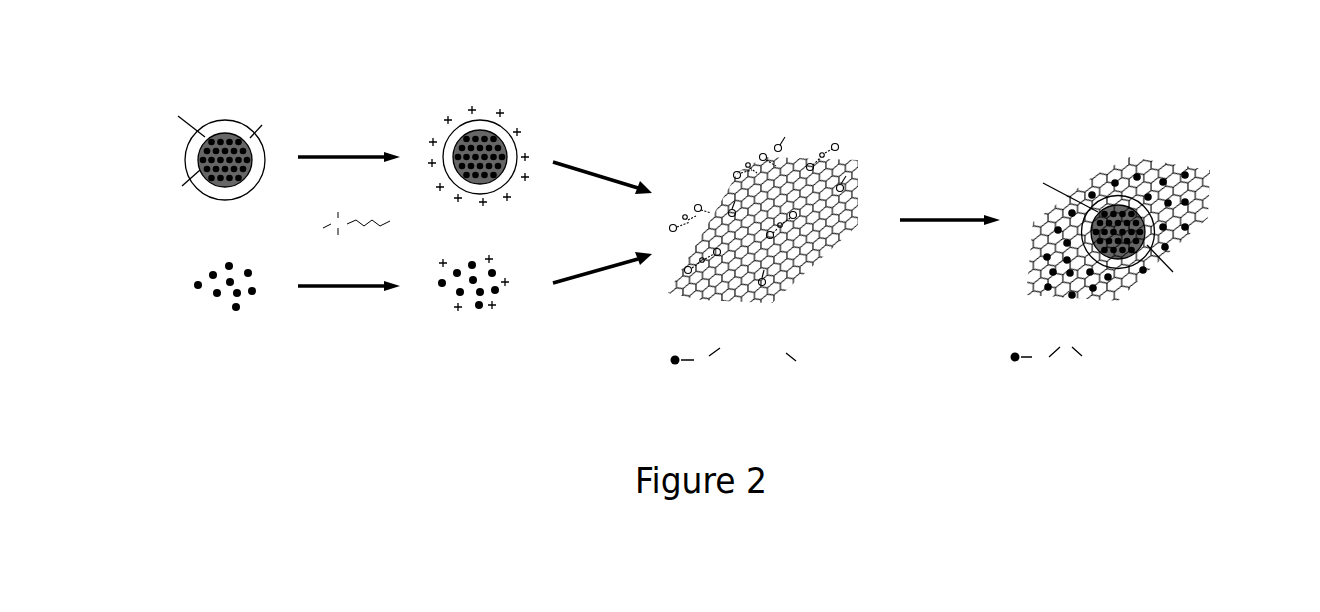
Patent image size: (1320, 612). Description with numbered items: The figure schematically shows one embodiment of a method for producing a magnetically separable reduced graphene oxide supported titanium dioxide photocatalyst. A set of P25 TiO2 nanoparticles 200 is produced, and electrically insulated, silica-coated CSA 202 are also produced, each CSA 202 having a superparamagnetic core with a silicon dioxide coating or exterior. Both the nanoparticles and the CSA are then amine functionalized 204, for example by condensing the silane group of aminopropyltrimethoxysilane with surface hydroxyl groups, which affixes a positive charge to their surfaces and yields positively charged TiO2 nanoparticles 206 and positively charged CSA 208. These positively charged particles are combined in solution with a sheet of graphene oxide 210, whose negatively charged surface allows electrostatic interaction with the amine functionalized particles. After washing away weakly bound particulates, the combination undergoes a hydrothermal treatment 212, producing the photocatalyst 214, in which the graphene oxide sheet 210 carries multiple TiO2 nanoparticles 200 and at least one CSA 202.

The P25 TiO2 nanoparticles 200 is at (215, 299).
The CSA 202 is at (222, 128).
The amine functionalization 204 is at (340, 157).
The positively charged TiO2 nanoparticles 206 is at (478, 312).
The positively charged CSA 208 is at (482, 122).
The graphene oxide sheet 210 is at (800, 165).
The hydrothermal treatment 212 is at (935, 177).
The magnetically separable reduced graphene oxide supported titanium dioxide photoca 214 is at (1150, 132).